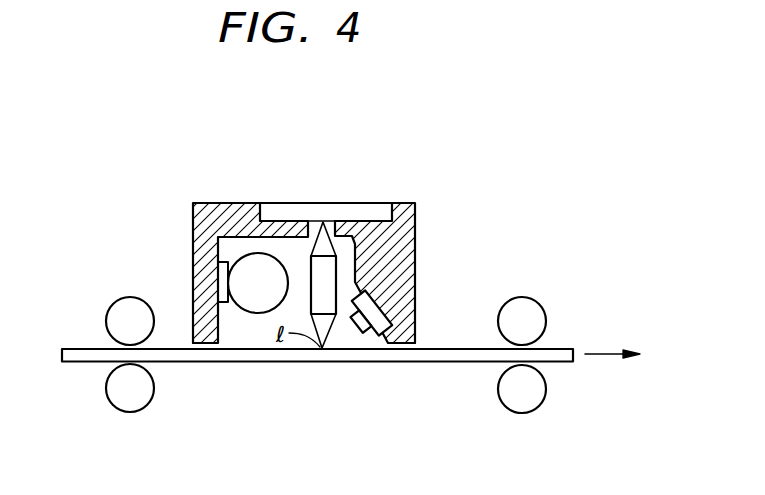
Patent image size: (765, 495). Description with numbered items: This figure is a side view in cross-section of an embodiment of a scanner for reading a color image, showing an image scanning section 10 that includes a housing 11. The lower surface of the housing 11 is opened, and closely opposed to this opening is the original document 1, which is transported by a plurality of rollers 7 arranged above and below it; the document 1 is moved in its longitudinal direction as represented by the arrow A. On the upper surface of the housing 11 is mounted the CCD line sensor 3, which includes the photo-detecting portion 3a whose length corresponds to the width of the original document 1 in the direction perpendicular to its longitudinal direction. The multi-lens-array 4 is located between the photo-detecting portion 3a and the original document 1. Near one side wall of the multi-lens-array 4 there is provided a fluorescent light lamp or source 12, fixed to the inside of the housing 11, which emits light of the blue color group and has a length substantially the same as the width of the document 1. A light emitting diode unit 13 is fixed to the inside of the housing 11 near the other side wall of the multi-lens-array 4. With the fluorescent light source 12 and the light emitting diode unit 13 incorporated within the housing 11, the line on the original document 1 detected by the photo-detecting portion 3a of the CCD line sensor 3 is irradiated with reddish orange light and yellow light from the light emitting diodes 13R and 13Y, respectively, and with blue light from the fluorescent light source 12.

The original document 1 is at (225, 362).
The CCD line sensor 3 is at (350, 202).
The photo-detecting portion 3a is at (323, 255).
The multi-lens-array 4 is at (330, 267).
The rollers 7 is at (123, 298).
The image scanning section 10 is at (402, 203).
The housing 11 is at (193, 224).
The fluorescent light source 12 is at (250, 253).
The light emitting diode unit 13 is at (388, 345).
The light emitting diodes (reddish orange) 13R is at (352, 318).
The light emitting diodes (yellow) 13Y is at (368, 332).
The arrow A is at (612, 355).